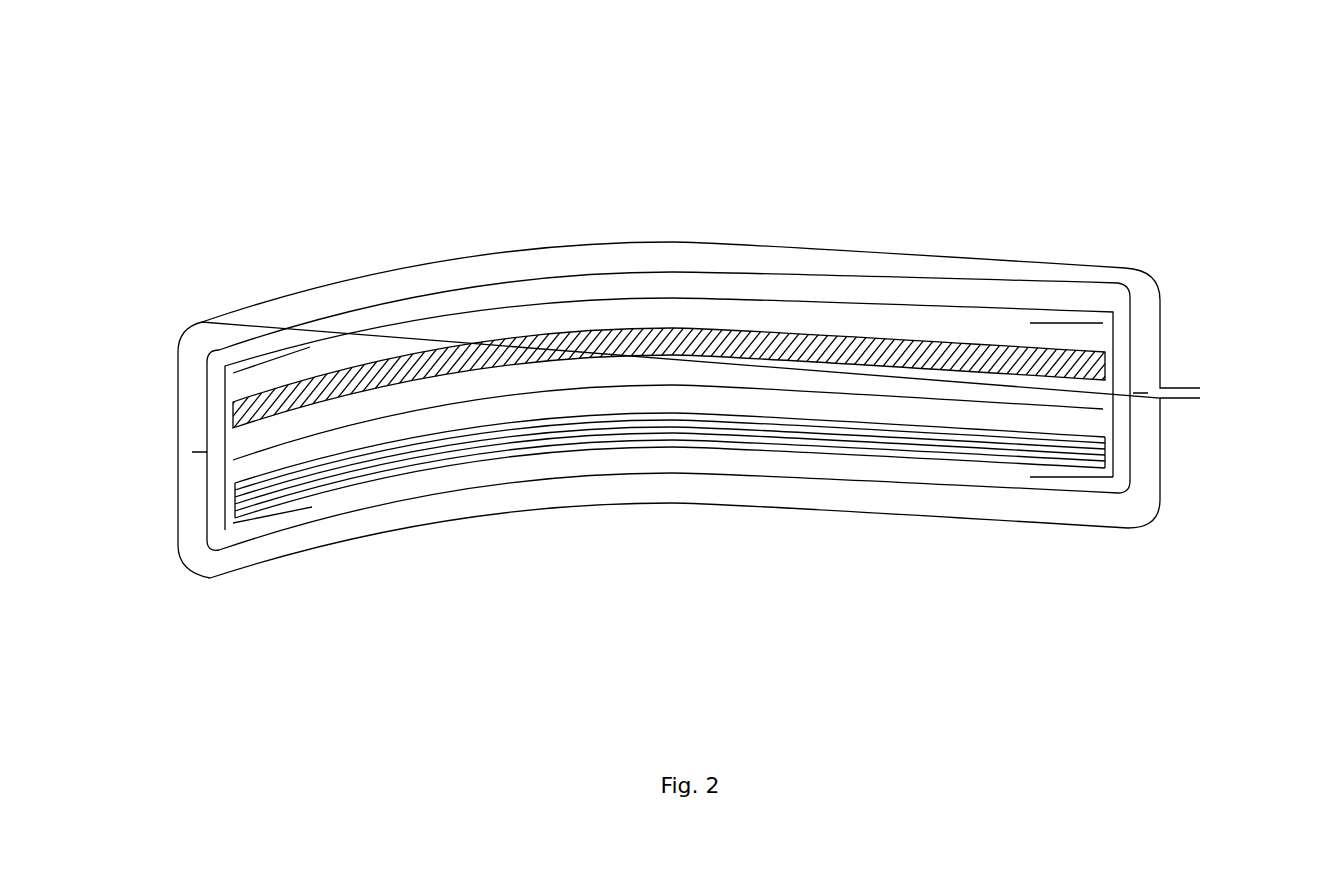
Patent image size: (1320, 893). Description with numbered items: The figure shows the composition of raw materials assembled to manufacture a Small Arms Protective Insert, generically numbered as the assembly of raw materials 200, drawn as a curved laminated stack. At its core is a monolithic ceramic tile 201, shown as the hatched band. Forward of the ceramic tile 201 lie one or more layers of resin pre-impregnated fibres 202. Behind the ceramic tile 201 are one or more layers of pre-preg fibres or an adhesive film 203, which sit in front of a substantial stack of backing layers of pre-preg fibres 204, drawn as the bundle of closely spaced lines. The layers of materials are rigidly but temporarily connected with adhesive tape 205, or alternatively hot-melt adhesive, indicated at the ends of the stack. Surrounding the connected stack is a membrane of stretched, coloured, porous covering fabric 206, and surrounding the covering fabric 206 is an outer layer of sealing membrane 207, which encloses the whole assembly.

The assembly of raw materials 200 is at (718, 128).
The monolithic ceramic tile 201 is at (416, 356).
The layers of resin pre-impregnated fibres 202 is at (920, 313).
The layers of pre-preg fibres or adhesive film 203 is at (457, 405).
The backing layers of pre-preg fibres 204 is at (1105, 452).
The adhesive tape 205 is at (273, 517).
The covering fabric 206 is at (660, 473).
The sealing membrane 207 is at (672, 242).